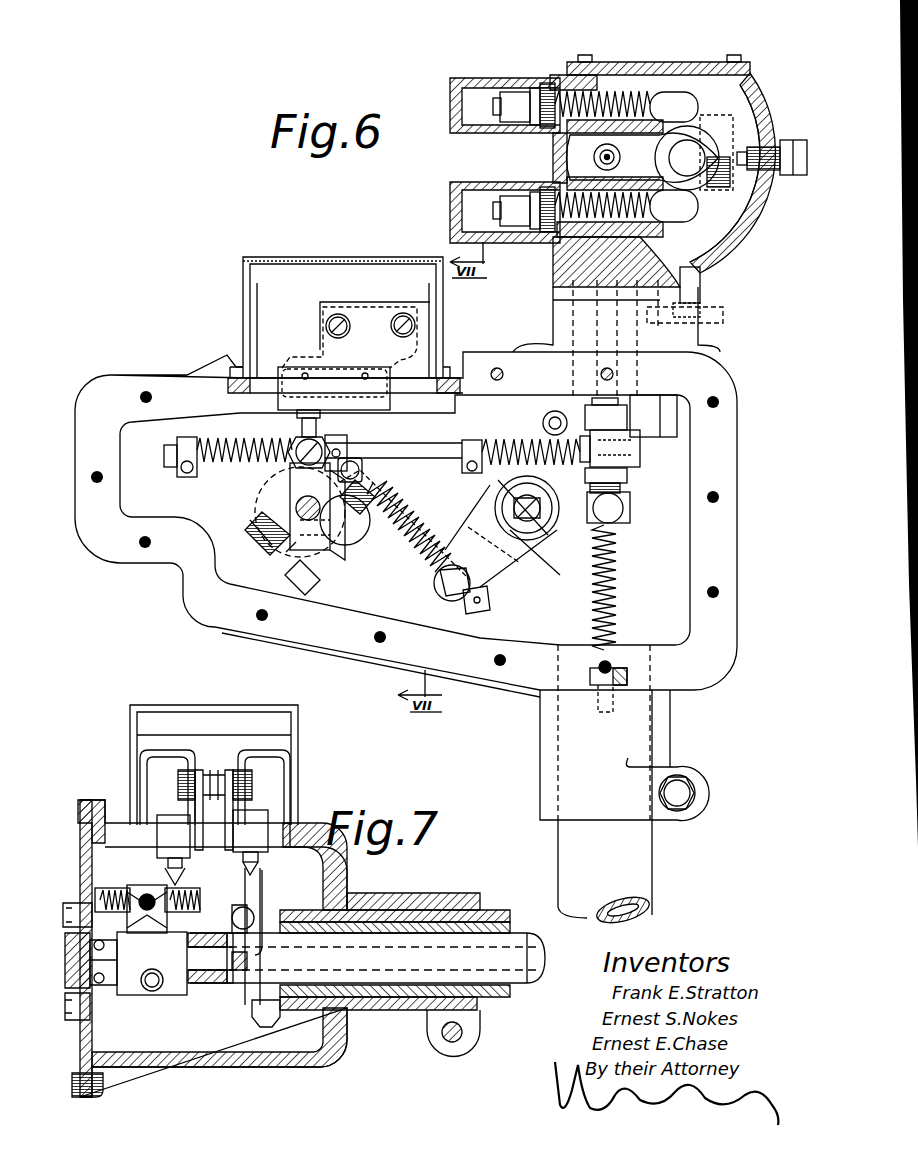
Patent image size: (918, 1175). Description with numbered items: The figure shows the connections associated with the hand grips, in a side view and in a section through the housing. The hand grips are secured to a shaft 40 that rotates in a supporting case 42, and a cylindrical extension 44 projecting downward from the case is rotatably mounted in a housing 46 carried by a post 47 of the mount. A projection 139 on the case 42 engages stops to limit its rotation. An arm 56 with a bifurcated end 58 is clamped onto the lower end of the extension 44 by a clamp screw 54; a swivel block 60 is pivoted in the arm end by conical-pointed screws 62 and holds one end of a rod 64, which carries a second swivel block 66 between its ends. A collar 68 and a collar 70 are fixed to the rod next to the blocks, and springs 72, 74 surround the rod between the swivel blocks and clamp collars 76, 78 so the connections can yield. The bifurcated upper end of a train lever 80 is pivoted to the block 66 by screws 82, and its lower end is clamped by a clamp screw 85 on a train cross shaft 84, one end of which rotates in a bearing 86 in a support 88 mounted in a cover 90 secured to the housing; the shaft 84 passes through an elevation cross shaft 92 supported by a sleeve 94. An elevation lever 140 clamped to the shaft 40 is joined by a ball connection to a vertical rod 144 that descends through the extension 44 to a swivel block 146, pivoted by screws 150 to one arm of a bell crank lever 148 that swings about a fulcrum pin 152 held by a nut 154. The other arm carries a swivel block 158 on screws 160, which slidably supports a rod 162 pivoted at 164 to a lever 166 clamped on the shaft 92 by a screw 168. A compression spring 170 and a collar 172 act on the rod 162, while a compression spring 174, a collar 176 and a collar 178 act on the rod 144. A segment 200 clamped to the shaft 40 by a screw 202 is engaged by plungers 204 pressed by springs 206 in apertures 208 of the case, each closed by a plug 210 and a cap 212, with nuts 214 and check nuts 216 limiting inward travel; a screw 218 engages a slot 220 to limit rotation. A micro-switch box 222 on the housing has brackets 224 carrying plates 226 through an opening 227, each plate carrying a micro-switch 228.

In FIG. 6, the shaft 40 is at (710, 120).
In FIG. 6, the supporting case 42 is at (687, 158).
In FIG. 6, the cylindrical extension 44 is at (705, 322).
In FIG. 6, the housing 46 is at (722, 464).
In FIG. 7, the housing 46 is at (190, 1063).
In FIG. 6, the post 47 is at (637, 858).
In FIG. 6, the clamp screw 54 is at (545, 418).
In FIG. 6, the arm 56 is at (660, 425).
In FIG. 6, the bifurcated end 58 is at (612, 418).
In FIG. 6, the swivel block 60 is at (627, 476).
In FIG. 6, the screws 62 is at (612, 392).
In FIG. 6, the rod 64 is at (392, 450).
In FIG. 7, the rod 64 is at (147, 896).
In FIG. 6, the swivel block 66 is at (275, 470).
In FIG. 7, the swivel block 66 is at (147, 909).
In FIG. 6, the collar 68 is at (640, 452).
In FIG. 6, the collar 70 is at (335, 442).
In FIG. 6, the spring 72 is at (528, 440).
In FIG. 6, the spring 74 is at (247, 460).
In FIG. 6, the clamp collar 76 is at (470, 440).
In FIG. 6, the clamp collar 78 is at (177, 440).
In FIG. 6, the train lever 80 is at (310, 506).
In FIG. 7, the train lever 80 is at (170, 985).
In FIG. 6, the screws 82 is at (300, 440).
In FIG. 7, the screws 82 is at (105, 888).
In FIG. 6, the train cross shaft 84 is at (290, 525).
In FIG. 7, the train cross shaft 84 is at (212, 986).
In FIG. 6, the clamp screw 85 is at (340, 532).
In FIG. 7, the clamp screw 85 is at (148, 990).
In FIG. 7, the bearing 86 is at (65, 935).
In FIG. 7, the support 88 is at (68, 1018).
In FIG. 7, the cover 90 is at (82, 1055).
In FIG. 7, the elevation cross shaft 92 is at (205, 933).
In FIG. 7, the sleeve 94 is at (470, 912).
In FIG. 6, the projection 139 is at (702, 296).
In FIG. 6, the elevation lever 140 is at (660, 165).
In FIG. 6, the vertical rod 144 is at (613, 712).
In FIG. 6, the swivel block 146 is at (630, 520).
In FIG. 6, the bell crank lever 148 is at (478, 540).
In FIG. 6, the screws 150 is at (623, 506).
In FIG. 6, the fulcrum pin 152 is at (520, 500).
In FIG. 6, the nut 154 is at (535, 530).
In FIG. 6, the swivel block 158 is at (435, 585).
In FIG. 6, the screws 160 is at (440, 592).
In FIG. 6, the rod 162 is at (400, 500).
In FIG. 6, the pivot 164 is at (362, 470).
In FIG. 7, the pivot 164 is at (262, 905).
In FIG. 6, the lever 166 is at (365, 510).
In FIG. 7, the lever 166 is at (262, 886).
In FIG. 6, the screw 168 is at (310, 572).
In FIG. 7, the screw 168 is at (272, 1020).
In FIG. 6, the compression spring 170 is at (415, 527).
In FIG. 6, the collar 172 is at (490, 598).
In FIG. 6, the compression spring 174 is at (618, 575).
In FIG. 6, the collar 176 is at (590, 677).
In FIG. 6, the collar 178 is at (620, 489).
In FIG. 6, the segment 200 is at (690, 110).
In FIG. 6, the screw 202 is at (750, 218).
In FIG. 6, the plungers 204 is at (672, 100).
In FIG. 6, the springs 206 is at (650, 90).
In FIG. 6, the apertures 208 is at (610, 90).
In FIG. 6, the plug 210 is at (548, 83).
In FIG. 6, the cap 212 is at (462, 90).
In FIG. 6, the nuts 214 is at (533, 92).
In FIG. 6, the check nuts 216 is at (510, 95).
In FIG. 6, the screw 218 is at (735, 170).
In FIG. 6, the slot 220 is at (750, 152).
In FIG. 6, the micro-switch box 222 is at (280, 258).
In FIG. 7, the micro-switch box 222 is at (300, 712).
In FIG. 6, the brackets 224 is at (277, 347).
In FIG. 7, the brackets 224 is at (148, 757).
In FIG. 6, the plates 226 is at (373, 347).
In FIG. 7, the plates 226 is at (196, 808).
In FIG. 6, the opening 227 is at (228, 380).
In FIG. 7, the opening 227 is at (290, 835).
In FIG. 6, the micro-switch 228 is at (392, 402).
In FIG. 7, the micro-switch 228 is at (212, 847).